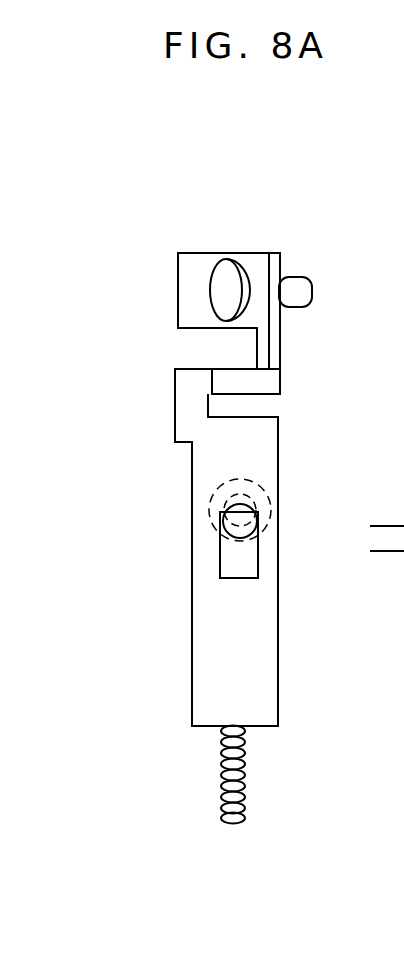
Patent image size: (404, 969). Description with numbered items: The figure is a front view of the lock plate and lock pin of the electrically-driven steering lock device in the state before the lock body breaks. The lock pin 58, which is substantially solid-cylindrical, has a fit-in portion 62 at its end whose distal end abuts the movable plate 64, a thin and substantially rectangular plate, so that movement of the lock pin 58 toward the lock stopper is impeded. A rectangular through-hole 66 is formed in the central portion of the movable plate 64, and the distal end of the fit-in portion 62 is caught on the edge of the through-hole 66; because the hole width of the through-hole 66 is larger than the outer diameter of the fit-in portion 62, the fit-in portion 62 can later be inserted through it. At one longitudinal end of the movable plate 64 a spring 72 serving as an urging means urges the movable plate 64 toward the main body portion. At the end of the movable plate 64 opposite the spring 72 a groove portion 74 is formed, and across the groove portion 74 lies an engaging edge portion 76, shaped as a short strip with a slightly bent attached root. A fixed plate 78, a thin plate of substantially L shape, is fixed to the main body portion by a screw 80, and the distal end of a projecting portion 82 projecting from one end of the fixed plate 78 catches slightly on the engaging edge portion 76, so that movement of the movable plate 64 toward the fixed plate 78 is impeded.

The lock pin 58 is at (265, 488).
The fit-in portion 62 is at (242, 518).
The movable plate 64 is at (283, 692).
The through-hole 66 is at (228, 561).
The spring 72 is at (246, 785).
The groove portion 74 is at (268, 410).
The engaging edge portion 76 is at (268, 383).
The fixed plate 78 is at (178, 292).
The screw 80 is at (228, 277).
The projecting portion 82 is at (276, 356).